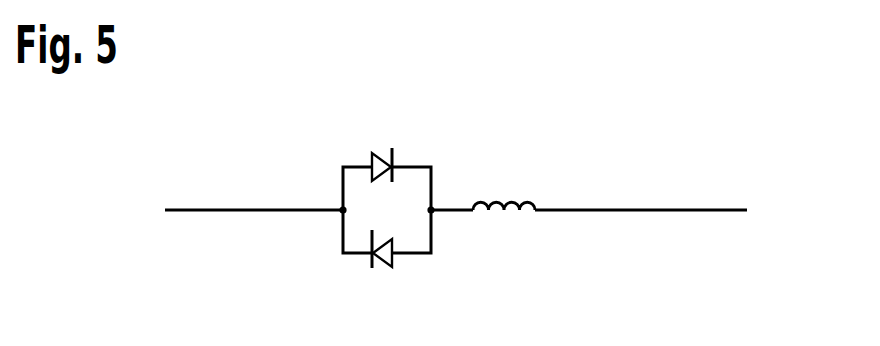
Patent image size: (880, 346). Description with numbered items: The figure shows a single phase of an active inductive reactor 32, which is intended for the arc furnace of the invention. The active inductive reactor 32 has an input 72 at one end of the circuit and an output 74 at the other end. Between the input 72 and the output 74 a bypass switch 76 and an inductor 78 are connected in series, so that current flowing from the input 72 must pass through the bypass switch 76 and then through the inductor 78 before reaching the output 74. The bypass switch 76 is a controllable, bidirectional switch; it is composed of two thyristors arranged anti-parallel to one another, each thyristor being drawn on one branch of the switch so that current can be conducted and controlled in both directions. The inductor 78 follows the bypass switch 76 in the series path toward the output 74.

The active inductive reactor 32 is at (431, 181).
The input 72 is at (205, 210).
The output 74 is at (664, 210).
The bypass switch 76 is at (381, 181).
The inductor 78 is at (533, 210).